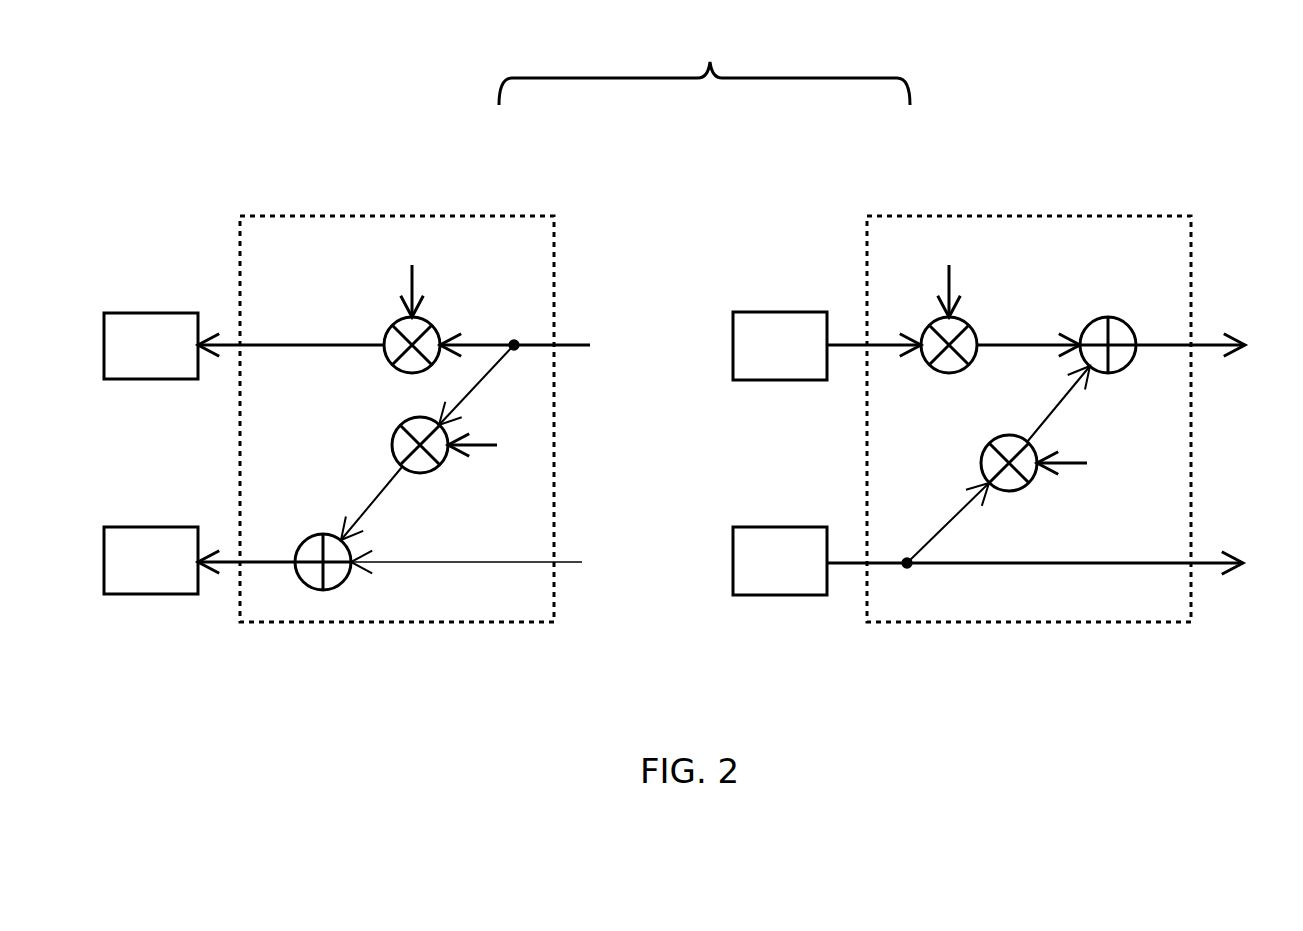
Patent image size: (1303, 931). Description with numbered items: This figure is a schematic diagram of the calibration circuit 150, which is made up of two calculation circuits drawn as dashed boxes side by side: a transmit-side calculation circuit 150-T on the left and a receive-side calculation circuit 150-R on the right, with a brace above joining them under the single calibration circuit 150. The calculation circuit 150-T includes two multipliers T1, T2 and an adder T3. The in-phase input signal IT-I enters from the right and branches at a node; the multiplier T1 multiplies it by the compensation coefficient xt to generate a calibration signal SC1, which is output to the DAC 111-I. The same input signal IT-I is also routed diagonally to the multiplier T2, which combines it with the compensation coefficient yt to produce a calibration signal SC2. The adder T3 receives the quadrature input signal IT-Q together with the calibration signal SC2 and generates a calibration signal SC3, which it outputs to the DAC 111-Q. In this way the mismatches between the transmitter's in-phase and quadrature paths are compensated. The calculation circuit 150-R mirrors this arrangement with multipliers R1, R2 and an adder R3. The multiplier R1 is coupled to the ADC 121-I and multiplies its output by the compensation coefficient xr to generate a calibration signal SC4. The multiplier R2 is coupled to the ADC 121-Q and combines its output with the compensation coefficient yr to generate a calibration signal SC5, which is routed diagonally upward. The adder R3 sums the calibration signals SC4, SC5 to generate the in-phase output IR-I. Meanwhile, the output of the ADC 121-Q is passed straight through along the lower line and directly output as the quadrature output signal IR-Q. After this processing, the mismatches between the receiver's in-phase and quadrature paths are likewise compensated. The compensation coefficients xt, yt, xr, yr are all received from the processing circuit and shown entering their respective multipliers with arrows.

The calibration circuit 150 is at (704, 71).
The calculation circuit 150-T is at (534, 216).
The calculation circuit 150-R is at (886, 216).
The DAC 111-I is at (151, 346).
The DAC 111-Q is at (151, 560).
The ADC 121-I is at (780, 346).
The ADC 121-Q is at (780, 561).
The multiplier T1 is at (398, 370).
The multiplier T2 is at (440, 470).
The adder T3 is at (345, 548).
The multiplier R1 is at (940, 370).
The multiplier R2 is at (982, 458).
The adder R3 is at (1103, 318).
The calibration signal SC1 is at (291, 337).
The calibration signal SC2 is at (370, 500).
The calibration signal SC3 is at (246, 555).
The calibration signal SC4 is at (1028, 337).
The calibration signal SC5 is at (1049, 404).
The input signal IT-I is at (530, 379).
The input signal IT-Q is at (489, 563).
The output IR-I is at (1210, 346).
The output signal IR-Q is at (1060, 564).
The compensation coefficient xt is at (411, 280).
The compensation coefficient yt is at (483, 446).
The compensation coefficient xr is at (949, 280).
The compensation coefficient yr is at (1072, 464).